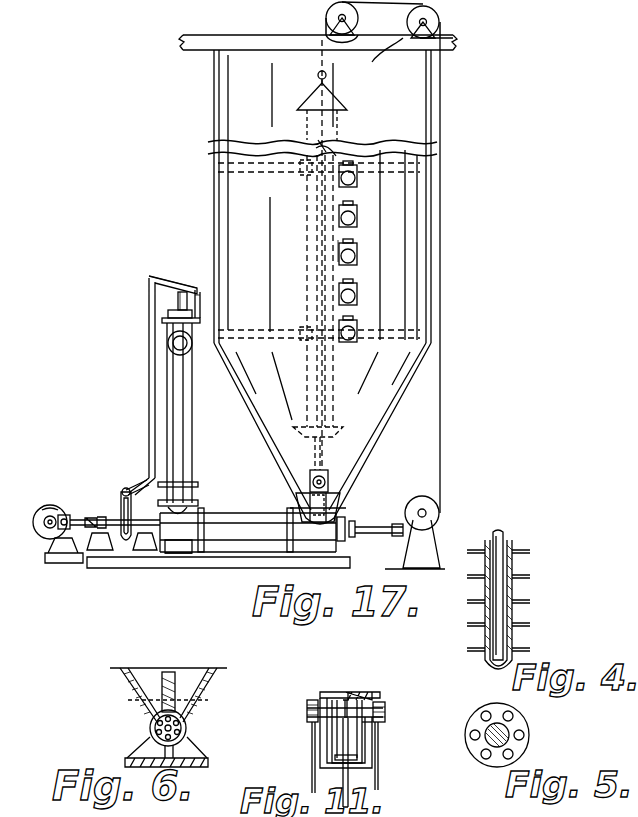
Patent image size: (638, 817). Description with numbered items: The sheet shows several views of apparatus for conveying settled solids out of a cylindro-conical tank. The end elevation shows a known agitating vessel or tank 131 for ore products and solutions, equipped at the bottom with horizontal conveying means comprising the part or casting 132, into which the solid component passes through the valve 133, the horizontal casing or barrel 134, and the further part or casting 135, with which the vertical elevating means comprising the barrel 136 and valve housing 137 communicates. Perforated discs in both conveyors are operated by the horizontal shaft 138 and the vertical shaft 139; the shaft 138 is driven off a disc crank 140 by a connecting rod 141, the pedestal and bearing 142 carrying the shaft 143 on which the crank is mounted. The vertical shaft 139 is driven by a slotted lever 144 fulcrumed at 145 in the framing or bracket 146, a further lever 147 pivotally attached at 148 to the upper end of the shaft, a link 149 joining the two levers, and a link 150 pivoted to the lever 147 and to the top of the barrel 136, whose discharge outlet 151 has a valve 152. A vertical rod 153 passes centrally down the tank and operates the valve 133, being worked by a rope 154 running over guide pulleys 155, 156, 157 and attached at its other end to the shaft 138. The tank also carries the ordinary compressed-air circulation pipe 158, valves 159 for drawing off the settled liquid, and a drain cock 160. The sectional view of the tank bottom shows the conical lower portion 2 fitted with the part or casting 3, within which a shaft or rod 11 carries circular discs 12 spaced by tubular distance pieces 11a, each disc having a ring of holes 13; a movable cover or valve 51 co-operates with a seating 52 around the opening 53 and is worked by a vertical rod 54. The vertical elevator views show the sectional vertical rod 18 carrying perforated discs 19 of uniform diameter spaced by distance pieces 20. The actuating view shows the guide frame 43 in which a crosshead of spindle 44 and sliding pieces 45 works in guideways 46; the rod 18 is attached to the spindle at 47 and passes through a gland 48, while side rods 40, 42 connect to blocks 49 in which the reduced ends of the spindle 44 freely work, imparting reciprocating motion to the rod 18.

In FIG. 17, the agitating vessel or tank 131 is at (215, 140).
In FIG. 17, the part or casting 132 is at (338, 514).
In FIG. 17, the valve 133 is at (300, 505).
In FIG. 17, the horizontal casing or barrel 134 is at (236, 513).
In FIG. 17, the further part or casting 135 is at (197, 546).
In FIG. 17, the vertical barrel 136 is at (188, 403).
In FIG. 17, the valve housing 137 is at (184, 495).
In FIG. 17, the horizontal shaft 138 is at (360, 536).
In FIG. 17, the vertical shaft 139 is at (178, 302).
In FIG. 17, the disc crank 140 is at (53, 506).
In FIG. 17, the connecting rod 141 is at (74, 517).
In FIG. 17, the pedestal and bearing 142 is at (60, 556).
In FIG. 17, the shaft 143 is at (48, 506).
In FIG. 17, the slotted lever 144 is at (118, 490).
In FIG. 17, the fulcrum 145 is at (124, 488).
In FIG. 17, the framing or bracket 146 is at (100, 532).
In FIG. 17, the lever 147 is at (170, 280).
In FIG. 17, the pivot 148 is at (182, 292).
In FIG. 17, the link 149 is at (150, 378).
In FIG. 17, the link 150 is at (200, 300).
In FIG. 17, the discharge outlet 151 is at (168, 345).
In FIG. 17, the valve 152 is at (166, 320).
In FIG. 17, the vertical rod 153 is at (318, 76).
In FIG. 17, the rope 154 is at (452, 350).
In FIG. 17, the guide pulley 155 is at (437, 507).
In FIG. 17, the guide pulley 156 is at (438, 15).
In FIG. 17, the guide pulley 157 is at (350, 5).
In FIG. 17, the pipe 158 is at (338, 250).
In FIG. 17, the valves 159 is at (357, 178).
In FIG. 17, the drain cock 160 is at (330, 480).
In FIG. 6, the conical lower portion 2 is at (123, 678).
In FIG. 6, the part or casting 3 is at (134, 705).
In FIG. 6, the shaft or rod 11 is at (186, 734).
In FIG. 6, the tubular distance pieces 11a is at (186, 727).
In FIG. 6, the discs or circular plates 12 is at (184, 741).
In FIG. 6, the holes 13 is at (158, 740).
In FIG. 6, the movable cover or valve 51 is at (184, 702).
In FIG. 6, the seating 52 is at (188, 720).
In FIG. 6, the opening 53 is at (188, 709).
In FIG. 6, the rod 54 is at (165, 680).
In FIG. 11, the vertical rod or shaft 18 is at (348, 738).
In FIG. 4, the vertical rod or shaft 18 is at (504, 612).
In FIG. 5, the vertical rod or shaft 18 is at (509, 740).
In FIG. 4, the perforated discs or circular plates 19 is at (528, 552).
In FIG. 5, the perforated discs or circular plates 19 is at (474, 748).
In FIG. 4, the distance pieces 20 is at (480, 578).
In FIG. 5, the distance pieces 20 is at (512, 725).
In FIG. 11, the side rod 40 is at (312, 764).
In FIG. 11, the side rod 42 is at (378, 765).
In FIG. 11, the guide frame 43 is at (332, 740).
In FIG. 11, the spindle 44 is at (307, 712).
In FIG. 11, the sliding pieces 45 is at (345, 695).
In FIG. 11, the guideways 46 is at (365, 730).
In FIG. 11, the attachment 47 is at (346, 698).
In FIG. 11, the gland 48 is at (350, 760).
In FIG. 11, the blocks or pieces 49 is at (309, 702).